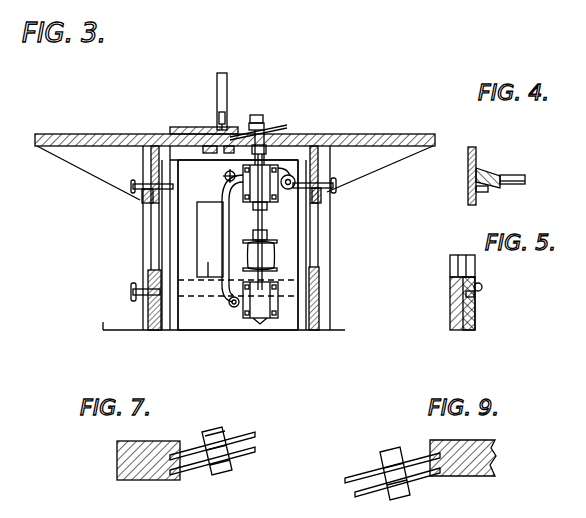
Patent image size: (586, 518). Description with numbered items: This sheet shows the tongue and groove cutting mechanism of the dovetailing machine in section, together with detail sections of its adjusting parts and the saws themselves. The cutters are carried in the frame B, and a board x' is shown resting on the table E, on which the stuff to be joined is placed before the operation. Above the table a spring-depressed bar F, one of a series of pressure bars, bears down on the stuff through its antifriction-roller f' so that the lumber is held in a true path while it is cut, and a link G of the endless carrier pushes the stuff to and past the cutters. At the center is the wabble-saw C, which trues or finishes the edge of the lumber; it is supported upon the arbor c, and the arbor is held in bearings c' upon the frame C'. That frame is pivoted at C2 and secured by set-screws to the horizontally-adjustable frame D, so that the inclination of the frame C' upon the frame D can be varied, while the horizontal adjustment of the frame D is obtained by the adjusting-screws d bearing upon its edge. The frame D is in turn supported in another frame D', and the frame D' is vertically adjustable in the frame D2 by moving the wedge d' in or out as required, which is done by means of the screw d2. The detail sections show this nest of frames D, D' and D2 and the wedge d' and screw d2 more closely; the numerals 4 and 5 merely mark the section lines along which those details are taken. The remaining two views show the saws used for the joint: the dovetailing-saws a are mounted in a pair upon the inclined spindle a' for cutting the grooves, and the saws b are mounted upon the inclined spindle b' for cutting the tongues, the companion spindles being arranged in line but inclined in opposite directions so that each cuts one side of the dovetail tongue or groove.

In FIG. 3, the table E is at (80, 134).
In FIG. 3, the board x' is at (200, 125).
In FIG. 3, the spring-depressed bar F is at (223, 80).
In FIG. 3, the antifriction-roller f' is at (237, 100).
In FIG. 3, the link G is at (234, 128).
In FIG. 3, the arbor c is at (263, 113).
In FIG. 3, the wabble-saw C is at (269, 212).
In FIG. 3, the pivot C2 is at (290, 175).
In FIG. 3, the frame B is at (325, 258).
In FIG. 4, the frame B is at (468, 180).
In FIG. 3, the horizontally-adjustable frame D is at (221, 262).
In FIG. 5, the horizontally-adjustable frame D is at (442, 277).
In FIG. 3, the opening 4 is at (128, 222).
In FIG. 3, the slot 5 is at (208, 348).
In FIG. 3, the frame C' is at (170, 241).
In FIG. 3, the frame D2 is at (170, 255).
In FIG. 4, the frame D2 is at (486, 172).
In FIG. 5, the frame D2 is at (476, 318).
In FIG. 3, the adjusting-screw d is at (222, 188).
In FIG. 3, the frame D' is at (212, 257).
In FIG. 4, the frame D' is at (505, 197).
In FIG. 5, the frame D' is at (458, 315).
In FIG. 3, the screw d2 is at (132, 292).
In FIG. 5, the screw d2 is at (482, 287).
In FIG. 3, the wedge d' is at (172, 344).
In FIG. 5, the wedge d' is at (490, 298).
In FIG. 3, the bearing c' is at (246, 341).
In FIG. 7, the saw a is at (227, 443).
In FIG. 7, the inclined spindle a' is at (218, 437).
In FIG. 9, the saw b is at (372, 481).
In FIG. 9, the inclined spindle b' is at (394, 460).